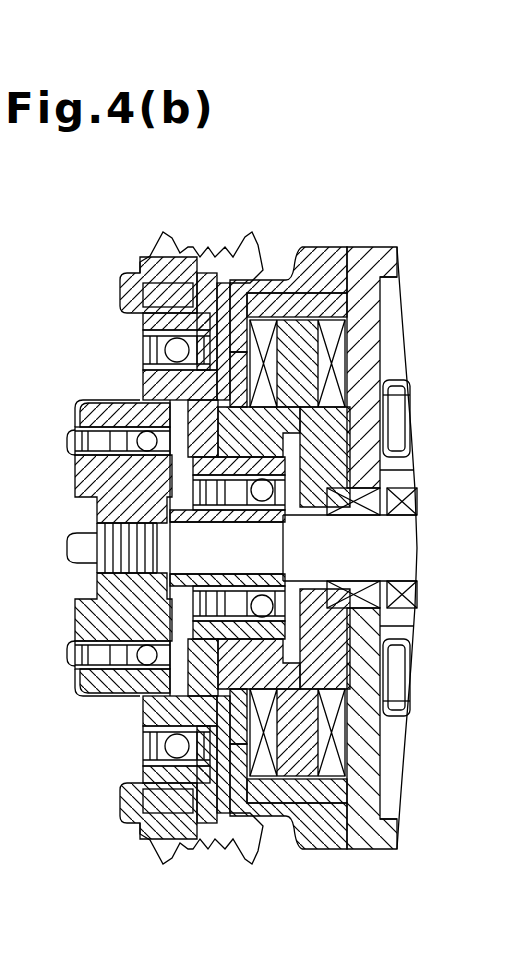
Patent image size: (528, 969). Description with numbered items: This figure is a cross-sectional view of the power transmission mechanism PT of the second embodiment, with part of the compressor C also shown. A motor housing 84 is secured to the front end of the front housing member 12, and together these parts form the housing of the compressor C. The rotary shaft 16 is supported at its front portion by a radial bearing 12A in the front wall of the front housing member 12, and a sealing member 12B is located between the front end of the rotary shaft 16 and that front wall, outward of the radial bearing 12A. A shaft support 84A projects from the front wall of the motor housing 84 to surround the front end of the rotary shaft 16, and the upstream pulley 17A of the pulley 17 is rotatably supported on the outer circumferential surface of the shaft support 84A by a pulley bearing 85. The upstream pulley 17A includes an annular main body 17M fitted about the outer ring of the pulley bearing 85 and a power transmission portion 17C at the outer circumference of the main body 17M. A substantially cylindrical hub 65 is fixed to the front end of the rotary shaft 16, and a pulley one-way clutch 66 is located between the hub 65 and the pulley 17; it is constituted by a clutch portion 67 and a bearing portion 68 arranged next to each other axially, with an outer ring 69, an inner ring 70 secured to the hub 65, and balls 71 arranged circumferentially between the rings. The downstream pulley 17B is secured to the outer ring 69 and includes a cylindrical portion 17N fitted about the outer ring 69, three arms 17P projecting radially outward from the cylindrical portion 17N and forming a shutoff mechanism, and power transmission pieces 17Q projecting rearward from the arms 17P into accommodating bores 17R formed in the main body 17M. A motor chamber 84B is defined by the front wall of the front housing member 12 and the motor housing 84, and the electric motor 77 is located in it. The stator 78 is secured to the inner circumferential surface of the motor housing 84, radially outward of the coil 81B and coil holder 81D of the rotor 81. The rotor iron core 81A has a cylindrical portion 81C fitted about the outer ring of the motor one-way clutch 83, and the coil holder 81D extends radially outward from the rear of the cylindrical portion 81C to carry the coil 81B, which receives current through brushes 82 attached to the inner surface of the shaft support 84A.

The front housing member 12 is at (385, 247).
The radial bearing 12A is at (398, 535).
The sealing member 12B is at (352, 582).
The rotary shaft 16 is at (417, 569).
The pulley 17 is at (148, 262).
The upstream pulley 17A is at (262, 258).
The downstream pulley 17B is at (130, 790).
The power transmission portion 17C is at (200, 250).
The main body 17M is at (150, 320).
The cylindrical portion 17N is at (122, 699).
The arms 17P is at (123, 760).
The power transmission pieces 17Q is at (155, 818).
The accommodating bores 17R is at (144, 852).
The hub 65 is at (97, 502).
The pulley one-way clutch 66 is at (80, 650).
The clutch portion 67 is at (80, 668).
The bearing portion 68 is at (270, 573).
The outer ring 69 is at (107, 689).
The inner ring 70 is at (78, 629).
The balls 71 is at (254, 582).
The electric motor 77 is at (304, 808).
The stator 78 is at (305, 300).
The rotor 81 is at (381, 471).
The rotor iron core 81A is at (384, 446).
The coil 81B is at (337, 348).
The cylindrical portion 81C is at (404, 412).
The coil holder 81D is at (308, 335).
The brushes 82 is at (228, 410).
The motor one-way clutch 83 is at (227, 501).
The motor housing 84 is at (344, 248).
The shaft support 84A is at (135, 373).
The motor chamber 84B is at (357, 371).
The pulley bearing 85 is at (168, 349).
The power transmission mechanism PT is at (95, 240).
The compressor C is at (432, 245).